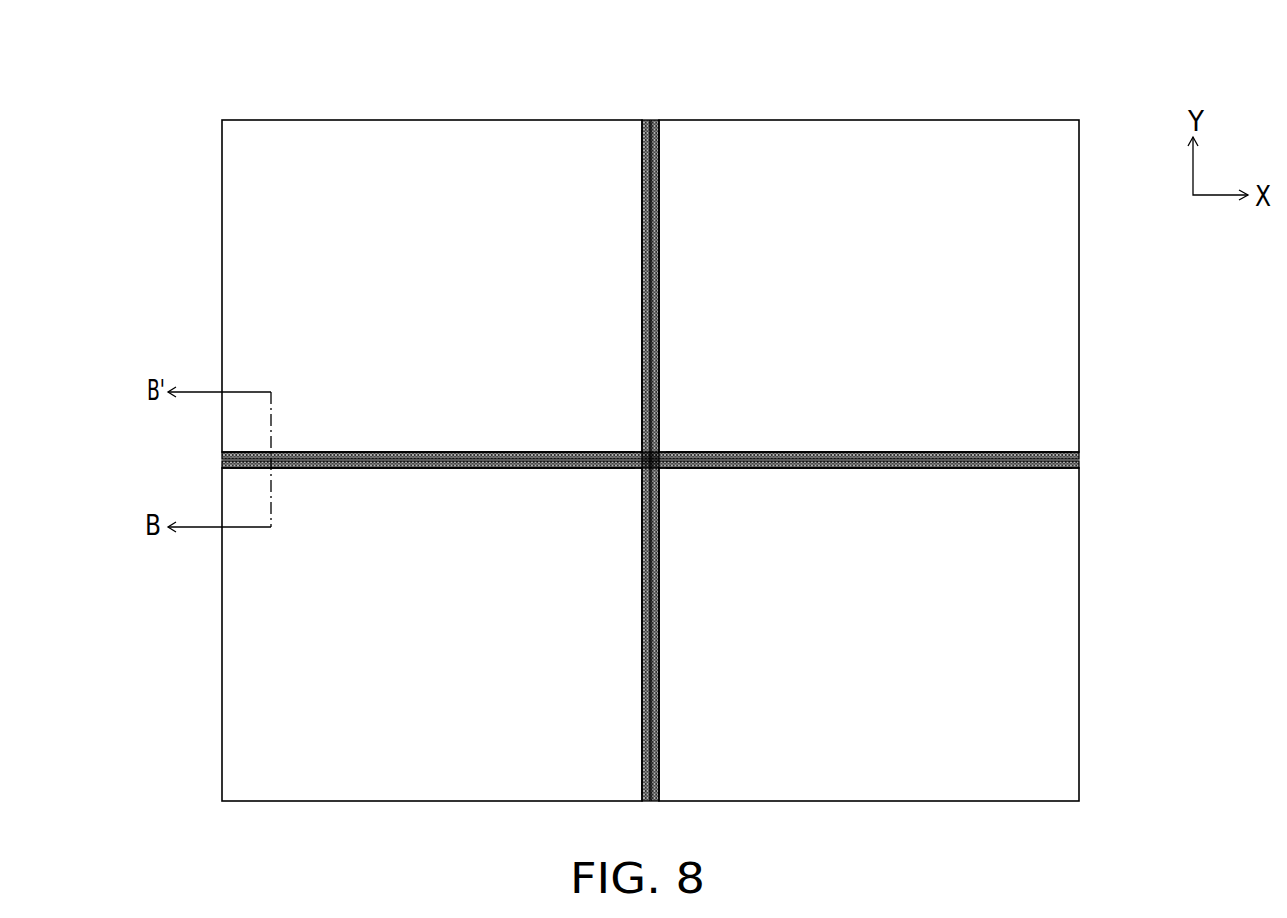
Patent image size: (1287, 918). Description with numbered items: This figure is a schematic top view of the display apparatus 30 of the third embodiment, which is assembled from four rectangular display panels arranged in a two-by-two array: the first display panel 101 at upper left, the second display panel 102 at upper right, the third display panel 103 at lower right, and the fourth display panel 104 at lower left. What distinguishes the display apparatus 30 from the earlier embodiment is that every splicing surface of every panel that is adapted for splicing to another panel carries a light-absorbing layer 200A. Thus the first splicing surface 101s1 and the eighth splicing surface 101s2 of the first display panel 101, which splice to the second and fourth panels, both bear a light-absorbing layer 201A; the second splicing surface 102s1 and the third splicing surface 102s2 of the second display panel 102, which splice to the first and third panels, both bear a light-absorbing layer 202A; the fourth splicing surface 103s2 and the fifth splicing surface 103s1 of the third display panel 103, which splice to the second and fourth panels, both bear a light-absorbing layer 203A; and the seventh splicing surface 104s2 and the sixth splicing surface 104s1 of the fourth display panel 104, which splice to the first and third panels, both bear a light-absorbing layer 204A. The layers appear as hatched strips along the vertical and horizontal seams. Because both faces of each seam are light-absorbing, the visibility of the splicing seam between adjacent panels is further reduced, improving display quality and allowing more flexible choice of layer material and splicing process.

The display apparatus 30 is at (1173, 846).
The first display panel 101 is at (423, 140).
The second display panel 102 is at (897, 140).
The third display panel 103 is at (1070, 668).
The fourth display panel 104 is at (230, 668).
The light-absorbing layer 200A is at (650, 418).
The light-absorbing layer 201A is at (645, 120).
The light-absorbing layer 202A is at (655, 120).
The light-absorbing layer 203A is at (1079, 458).
The light-absorbing layer 204A is at (222, 464).
The first splicing surface 101s1 is at (645, 212).
The eighth splicing surface 101s2 is at (380, 455).
The second splicing surface 102s1 is at (656, 322).
The third splicing surface 102s2 is at (981, 455).
The fifth splicing surface 103s1 is at (656, 587).
The fourth splicing surface 103s2 is at (794, 464).
The sixth splicing surface 104s1 is at (645, 712).
The seventh splicing surface 104s2 is at (506, 464).